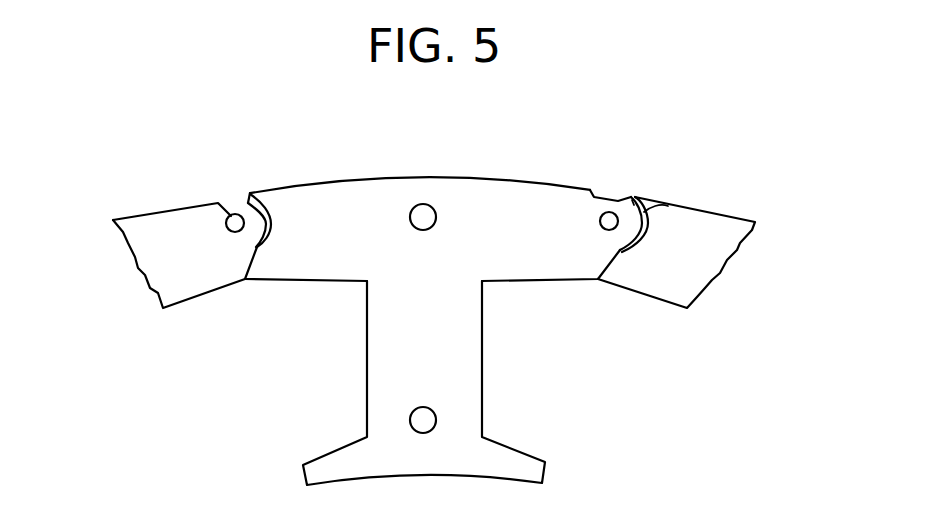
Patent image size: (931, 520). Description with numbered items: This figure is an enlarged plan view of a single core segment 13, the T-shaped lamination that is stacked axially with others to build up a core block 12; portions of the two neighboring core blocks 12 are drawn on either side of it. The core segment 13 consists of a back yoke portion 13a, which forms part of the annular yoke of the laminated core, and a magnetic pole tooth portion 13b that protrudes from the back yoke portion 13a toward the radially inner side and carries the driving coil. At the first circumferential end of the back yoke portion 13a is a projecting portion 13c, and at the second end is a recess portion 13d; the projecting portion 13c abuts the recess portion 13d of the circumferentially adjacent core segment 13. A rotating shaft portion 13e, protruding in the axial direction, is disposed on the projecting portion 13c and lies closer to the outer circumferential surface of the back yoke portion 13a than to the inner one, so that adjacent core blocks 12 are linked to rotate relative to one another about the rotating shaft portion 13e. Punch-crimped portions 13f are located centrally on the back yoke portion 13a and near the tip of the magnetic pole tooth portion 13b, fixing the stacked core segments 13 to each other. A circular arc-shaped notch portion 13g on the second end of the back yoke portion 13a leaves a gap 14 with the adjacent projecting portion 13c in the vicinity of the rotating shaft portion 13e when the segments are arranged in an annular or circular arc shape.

The core block 12 is at (152, 203).
The core segment 13 is at (368, 180).
The back yoke portion 13a is at (470, 210).
The magnetic pole tooth portion 13b is at (445, 352).
The projecting portion 13c is at (611, 201).
The recess portion 13d is at (253, 193).
The rotating shaft portion 13e is at (218, 203).
The punch-crimped portion 13f is at (423, 204).
The circular arc-shaped notch portion 13g is at (668, 206).
The gap 14 is at (632, 200).